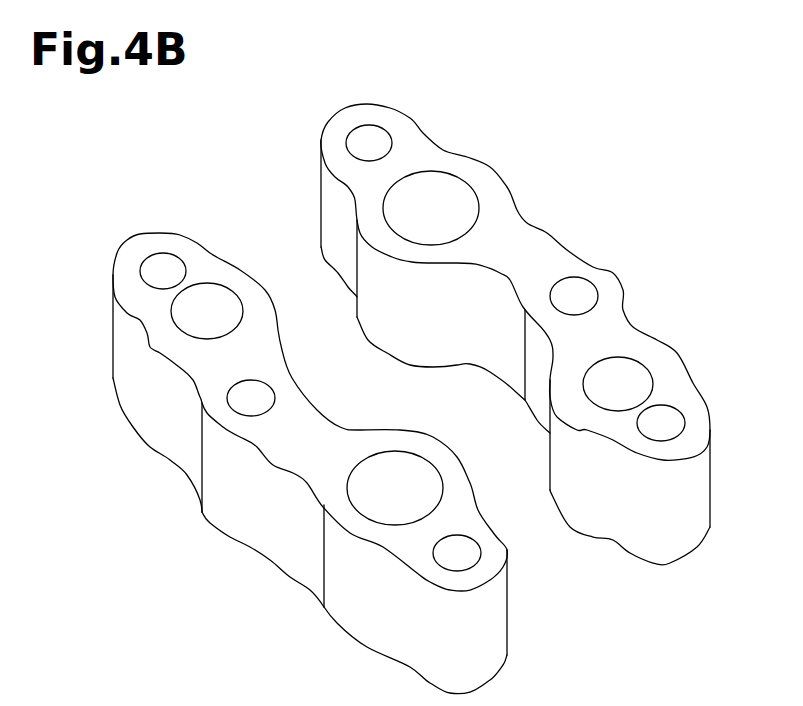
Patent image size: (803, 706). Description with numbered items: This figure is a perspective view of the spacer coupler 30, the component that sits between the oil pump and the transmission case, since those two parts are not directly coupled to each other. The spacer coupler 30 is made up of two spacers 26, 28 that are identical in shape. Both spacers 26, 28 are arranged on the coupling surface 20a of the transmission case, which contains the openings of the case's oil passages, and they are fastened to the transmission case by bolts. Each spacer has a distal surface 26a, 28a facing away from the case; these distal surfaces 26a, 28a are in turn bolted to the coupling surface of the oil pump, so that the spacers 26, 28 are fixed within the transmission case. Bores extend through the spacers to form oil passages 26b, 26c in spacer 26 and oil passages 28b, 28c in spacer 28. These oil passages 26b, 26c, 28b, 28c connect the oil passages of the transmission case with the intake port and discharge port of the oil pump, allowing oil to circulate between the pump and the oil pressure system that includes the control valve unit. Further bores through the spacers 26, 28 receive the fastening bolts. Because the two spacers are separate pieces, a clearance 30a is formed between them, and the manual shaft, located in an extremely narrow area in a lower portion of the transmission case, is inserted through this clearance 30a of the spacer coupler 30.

The spacer coupler 30 is at (158, 127).
The spacer 28 is at (153, 235).
The spacer 26 is at (322, 126).
The distal surface 28a is at (297, 443).
The oil passage 28b is at (390, 500).
The oil passage 28c is at (197, 315).
The distal surface 26a is at (545, 250).
The oil passage 26b is at (447, 200).
The oil passage 26c is at (633, 385).
The clearance 30a is at (435, 390).
The coupling surface 20a is at (620, 587).